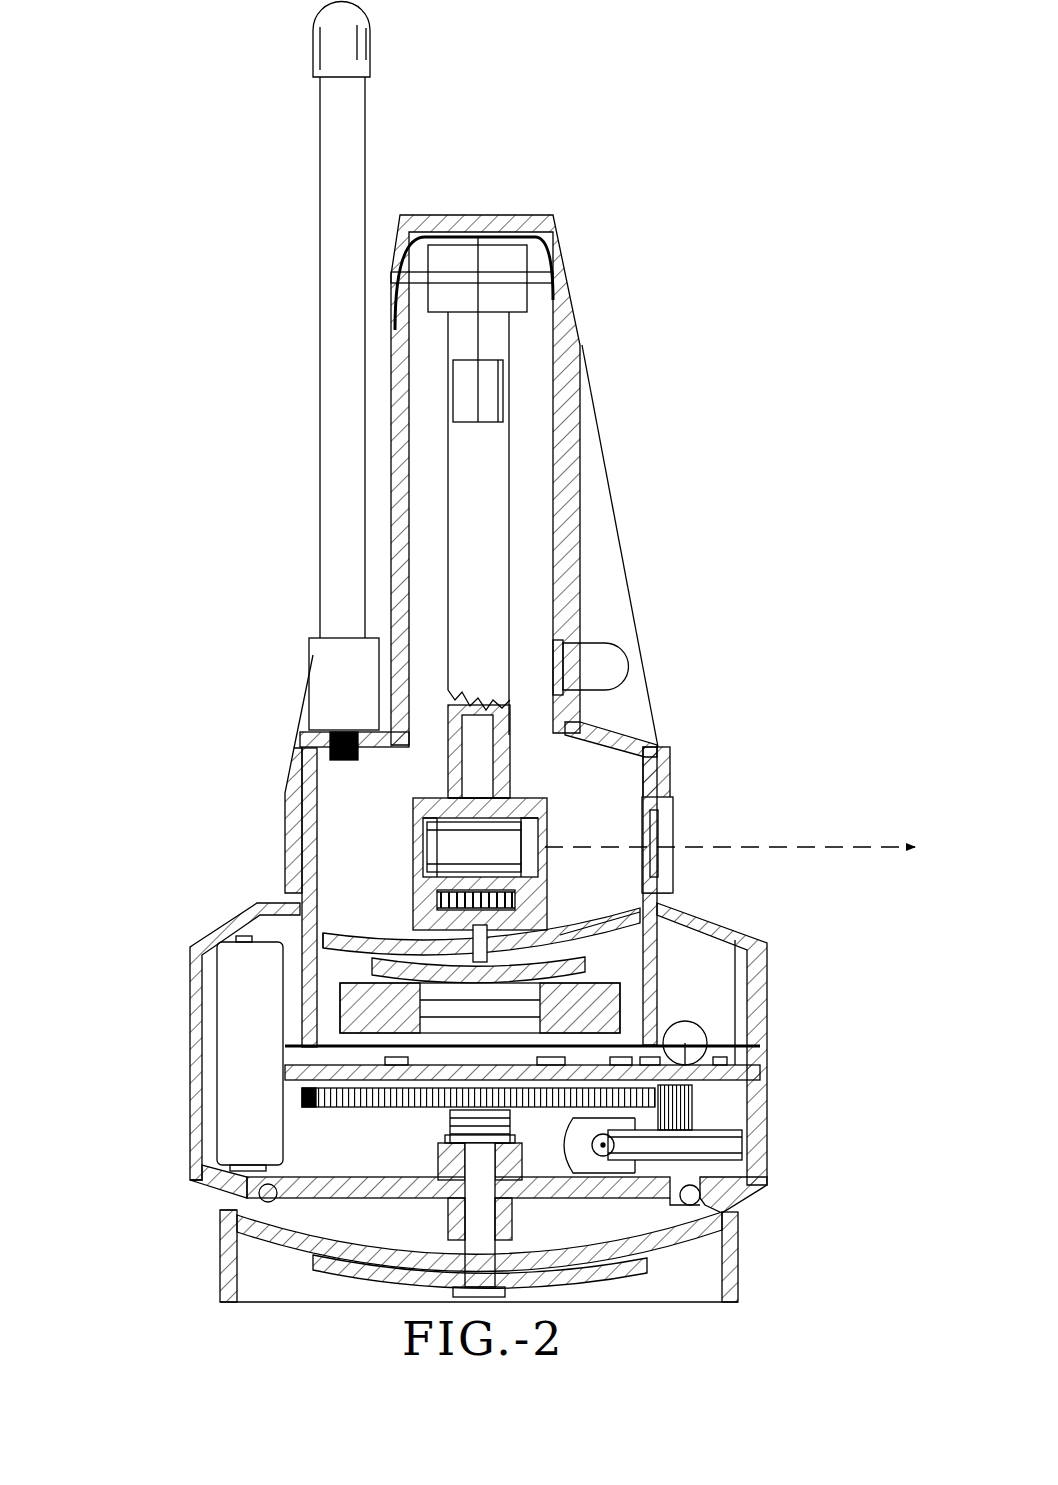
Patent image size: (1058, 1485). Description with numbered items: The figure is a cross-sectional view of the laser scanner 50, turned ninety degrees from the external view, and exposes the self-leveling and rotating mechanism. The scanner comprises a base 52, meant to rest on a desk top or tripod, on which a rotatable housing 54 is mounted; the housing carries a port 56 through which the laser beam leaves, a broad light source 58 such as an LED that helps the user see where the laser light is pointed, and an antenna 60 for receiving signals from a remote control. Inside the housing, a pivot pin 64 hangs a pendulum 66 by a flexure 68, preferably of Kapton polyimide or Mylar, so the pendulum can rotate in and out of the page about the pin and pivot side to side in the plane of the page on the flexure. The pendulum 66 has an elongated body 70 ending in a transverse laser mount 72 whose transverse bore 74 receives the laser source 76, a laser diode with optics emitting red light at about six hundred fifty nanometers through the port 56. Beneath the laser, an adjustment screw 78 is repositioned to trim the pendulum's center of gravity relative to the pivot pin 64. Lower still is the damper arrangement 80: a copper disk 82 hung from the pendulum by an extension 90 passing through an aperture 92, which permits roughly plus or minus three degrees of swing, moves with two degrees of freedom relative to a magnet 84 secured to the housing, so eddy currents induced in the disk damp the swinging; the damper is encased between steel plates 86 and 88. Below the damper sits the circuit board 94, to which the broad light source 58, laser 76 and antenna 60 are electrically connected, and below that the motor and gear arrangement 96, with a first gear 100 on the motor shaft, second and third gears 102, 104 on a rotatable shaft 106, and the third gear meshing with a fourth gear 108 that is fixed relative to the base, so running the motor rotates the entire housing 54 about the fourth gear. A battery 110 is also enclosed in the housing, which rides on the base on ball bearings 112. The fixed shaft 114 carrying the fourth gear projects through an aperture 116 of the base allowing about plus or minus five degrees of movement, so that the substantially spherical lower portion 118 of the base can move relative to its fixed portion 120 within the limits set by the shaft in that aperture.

The laser scanner 50 is at (720, 112).
The base 52 is at (205, 1248).
The rotatable housing 54 is at (285, 793).
The port 56 is at (673, 822).
The broad light source 58 is at (618, 660).
The antenna 60 is at (353, 103).
The pivot pin 64 is at (535, 275).
The pendulum 66 is at (497, 553).
The flexure 68 is at (478, 338).
The elongated body 70 is at (483, 687).
The transverse laser mount 72 is at (540, 800).
The transverse bore 74 is at (418, 823).
The laser source 76 is at (500, 843).
The adjustment screw 78 is at (520, 897).
The damper arrangement 80 is at (178, 1003).
The copper disk 82 is at (350, 945).
The magnet 84 is at (610, 1005).
The steel plate 86 is at (590, 935).
The steel plate 88 is at (610, 1027).
The extension 90 is at (445, 940).
The aperture 92 is at (556, 937).
The circuit board 94 is at (720, 1075).
The motor and gear arrangement 96 is at (800, 1088).
The first gear 100 is at (590, 1135).
The second gear 102 is at (727, 1143).
The third gear 104 is at (695, 1102).
The rotatable shaft 106 is at (678, 1167).
The fourth gear 108 is at (318, 1107).
The battery 110 is at (235, 1075).
The ball bearings 112 is at (700, 1195).
The fixed shaft 114 is at (480, 1238).
The aperture 116 is at (540, 1265).
The lower portion 118 is at (330, 1213).
The fixed portion 120 is at (215, 1285).